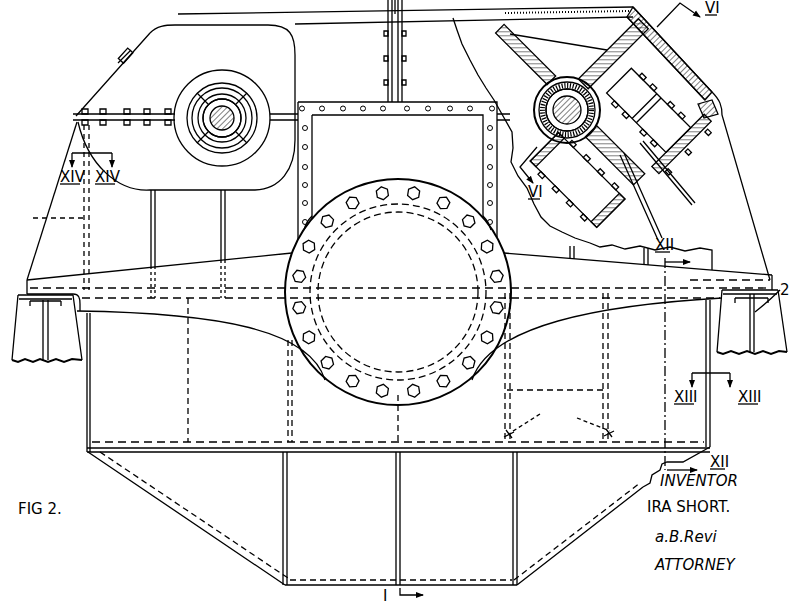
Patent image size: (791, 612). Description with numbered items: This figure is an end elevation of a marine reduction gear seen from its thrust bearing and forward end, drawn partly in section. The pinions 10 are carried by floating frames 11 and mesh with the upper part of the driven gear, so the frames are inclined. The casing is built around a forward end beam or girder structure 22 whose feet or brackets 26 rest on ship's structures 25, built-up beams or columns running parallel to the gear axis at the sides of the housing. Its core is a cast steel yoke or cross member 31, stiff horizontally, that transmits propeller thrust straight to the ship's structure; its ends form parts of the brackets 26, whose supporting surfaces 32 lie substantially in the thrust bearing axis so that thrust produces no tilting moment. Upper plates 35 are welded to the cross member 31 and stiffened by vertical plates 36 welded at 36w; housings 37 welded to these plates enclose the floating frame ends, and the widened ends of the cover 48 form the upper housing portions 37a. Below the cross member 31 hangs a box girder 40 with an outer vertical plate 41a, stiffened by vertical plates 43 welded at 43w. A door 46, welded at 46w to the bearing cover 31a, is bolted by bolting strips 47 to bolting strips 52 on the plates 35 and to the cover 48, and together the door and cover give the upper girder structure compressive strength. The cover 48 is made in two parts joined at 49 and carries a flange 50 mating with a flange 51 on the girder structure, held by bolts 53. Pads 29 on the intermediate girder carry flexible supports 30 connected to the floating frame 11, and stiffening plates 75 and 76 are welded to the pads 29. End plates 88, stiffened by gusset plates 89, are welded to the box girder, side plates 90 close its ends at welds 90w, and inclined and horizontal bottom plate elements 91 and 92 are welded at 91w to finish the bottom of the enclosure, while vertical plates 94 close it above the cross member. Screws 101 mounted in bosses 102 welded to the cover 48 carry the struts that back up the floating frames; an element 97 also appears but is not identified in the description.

The pinions 10 is at (230, 112).
The floating frames 11 is at (533, 75).
The forward end beam or girder structure 22 is at (254, 315).
The ship's structure 25 is at (43, 330).
The feet or brackets 26 is at (52, 278).
The pads 29 is at (712, 148).
The flexible supports 30 is at (677, 100).
The cross member 31 is at (575, 325).
The cover 31a is at (388, 190).
The supporting surfaces 32 is at (724, 298).
The upper plates 35 is at (292, 167).
The vertical plates 36 is at (220, 210).
The welds 36w is at (150, 196).
The housings 37 is at (245, 174).
The upper forward housing portions 37a is at (178, 17).
The box girder 40 is at (239, 393).
The outer vertical cross plate 41a is at (480, 425).
The vertical plates 43 is at (555, 389).
The welds 43w is at (559, 423).
The door 46 is at (418, 113).
The weld 46w is at (314, 222).
The bolting strips 47 is at (328, 102).
The gear cover 48 is at (330, 36).
The connection 49 is at (418, 18).
The flange 50 is at (110, 108).
The flange 51 is at (118, 124).
The bolting strips 52 is at (352, 102).
The bolts 53 is at (168, 108).
The stiffening plates 75 is at (640, 185).
The stiffening plates 76 is at (660, 238).
The end plates 88 is at (228, 518).
The gusset plates 89 is at (288, 502).
The side plates 90 is at (87, 425).
The welds 90w is at (82, 305).
The inclined bottom plate elements 91 is at (182, 518).
The welds 91w is at (572, 536).
The horizontal bottom plate element 92 is at (340, 592).
The vertical plates 94 is at (45, 220).
The bearing 97 is at (212, 126).
The screws 101 is at (122, 50).
The bosses 102 is at (120, 58).